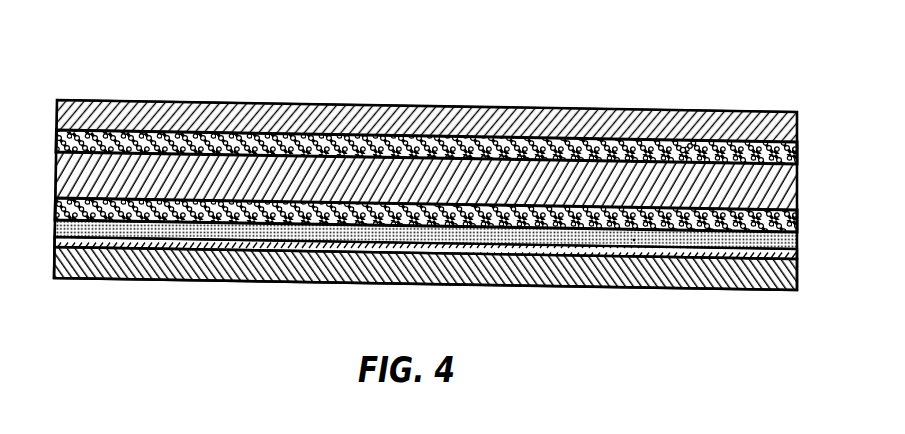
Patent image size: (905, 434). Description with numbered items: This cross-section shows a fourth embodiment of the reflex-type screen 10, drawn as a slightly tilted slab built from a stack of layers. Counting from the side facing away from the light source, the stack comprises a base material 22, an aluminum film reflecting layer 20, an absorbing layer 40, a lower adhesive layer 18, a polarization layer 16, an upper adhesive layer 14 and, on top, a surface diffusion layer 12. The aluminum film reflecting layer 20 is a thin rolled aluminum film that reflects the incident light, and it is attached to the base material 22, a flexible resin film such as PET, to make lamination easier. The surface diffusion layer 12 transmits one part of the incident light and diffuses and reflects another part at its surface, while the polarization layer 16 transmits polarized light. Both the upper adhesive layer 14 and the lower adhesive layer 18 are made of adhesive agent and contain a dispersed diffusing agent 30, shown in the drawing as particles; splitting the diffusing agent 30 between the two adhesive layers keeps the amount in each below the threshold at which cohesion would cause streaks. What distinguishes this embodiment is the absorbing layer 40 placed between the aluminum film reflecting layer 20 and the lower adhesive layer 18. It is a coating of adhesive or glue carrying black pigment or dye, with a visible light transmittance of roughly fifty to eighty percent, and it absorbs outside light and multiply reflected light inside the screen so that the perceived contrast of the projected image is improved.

The reflex-type screen 10 is at (819, 39).
The surface diffusion layer 12 is at (798, 118).
The upper adhesive layer 14 is at (798, 152).
The polarization layer 16 is at (798, 178).
The lower adhesive layer 18 is at (798, 218).
The absorbing layer 40 is at (798, 239).
The aluminum film reflecting layer 20 is at (798, 253).
The base material 22 is at (798, 287).
The diffusing agent 30 is at (683, 150).